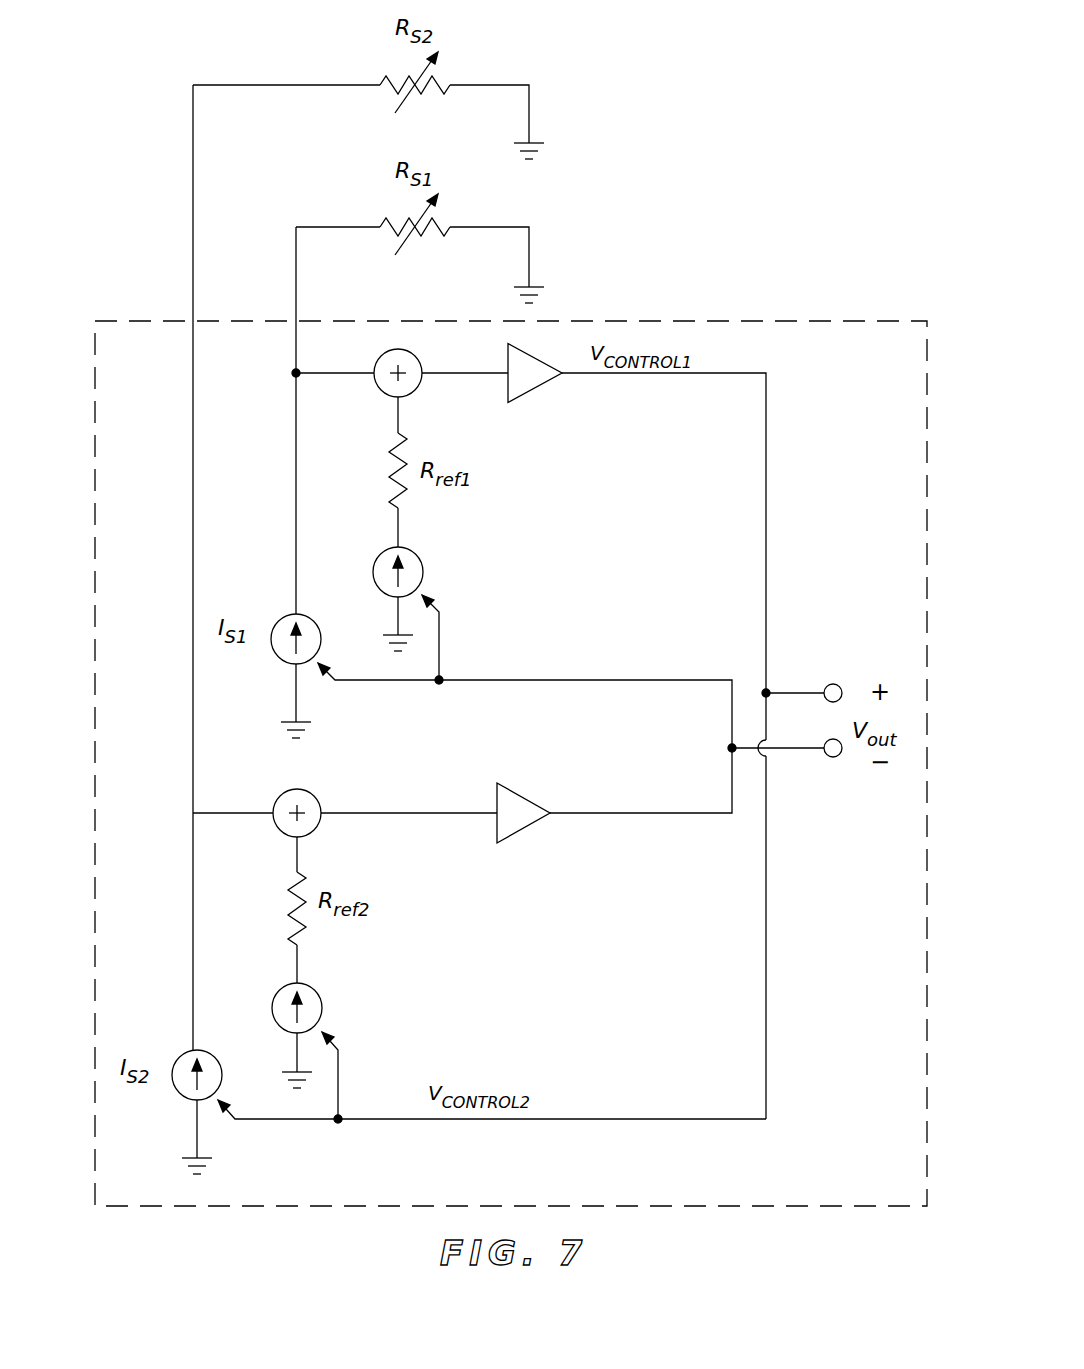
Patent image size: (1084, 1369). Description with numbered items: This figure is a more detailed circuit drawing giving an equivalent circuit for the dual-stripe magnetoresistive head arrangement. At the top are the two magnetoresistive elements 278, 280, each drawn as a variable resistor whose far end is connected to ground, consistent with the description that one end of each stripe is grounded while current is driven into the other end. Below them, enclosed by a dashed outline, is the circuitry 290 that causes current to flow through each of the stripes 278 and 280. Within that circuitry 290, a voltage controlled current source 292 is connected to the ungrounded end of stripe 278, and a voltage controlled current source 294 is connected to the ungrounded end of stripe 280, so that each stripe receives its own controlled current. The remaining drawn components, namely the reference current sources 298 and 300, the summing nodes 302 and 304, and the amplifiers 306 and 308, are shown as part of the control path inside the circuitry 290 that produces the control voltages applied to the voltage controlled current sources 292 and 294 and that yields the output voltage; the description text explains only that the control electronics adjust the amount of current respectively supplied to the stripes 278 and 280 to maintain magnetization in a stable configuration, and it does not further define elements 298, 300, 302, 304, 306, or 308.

The magnetoresistive element 278 is at (372, 58).
The magnetoresistive element 280 is at (372, 200).
The circuitry 290 is at (777, 318).
The voltage controlled current source 292 is at (178, 1053).
The voltage controlled current source 294 is at (280, 620).
The reference current source for Rref2 298 is at (323, 948).
The reference current source for Rref1 300 is at (420, 515).
The summing node 302 is at (318, 793).
The summing node 304 is at (375, 388).
The amplifier 306 is at (540, 388).
The amplifier 308 is at (525, 828).